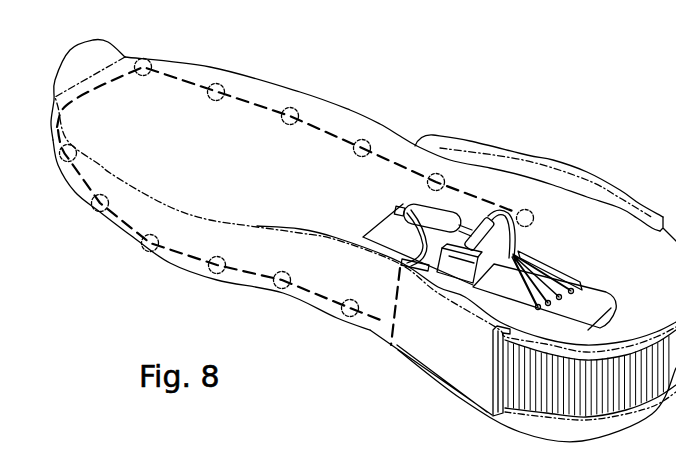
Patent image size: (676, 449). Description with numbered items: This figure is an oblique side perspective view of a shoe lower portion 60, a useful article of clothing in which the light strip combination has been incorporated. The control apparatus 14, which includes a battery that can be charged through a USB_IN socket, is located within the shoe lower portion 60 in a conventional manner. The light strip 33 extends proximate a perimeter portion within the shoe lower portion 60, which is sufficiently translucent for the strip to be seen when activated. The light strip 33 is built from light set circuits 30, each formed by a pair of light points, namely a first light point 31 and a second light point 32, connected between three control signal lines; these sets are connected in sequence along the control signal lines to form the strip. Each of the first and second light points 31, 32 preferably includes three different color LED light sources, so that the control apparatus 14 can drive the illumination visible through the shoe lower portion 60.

The control apparatus 14 is at (617, 306).
The light set circuit 30 is at (283, 194).
The first light point 31 is at (342, 313).
The second light point 32 is at (276, 286).
The light strip 33 is at (391, 352).
The shoe lower portion 60 is at (396, 383).